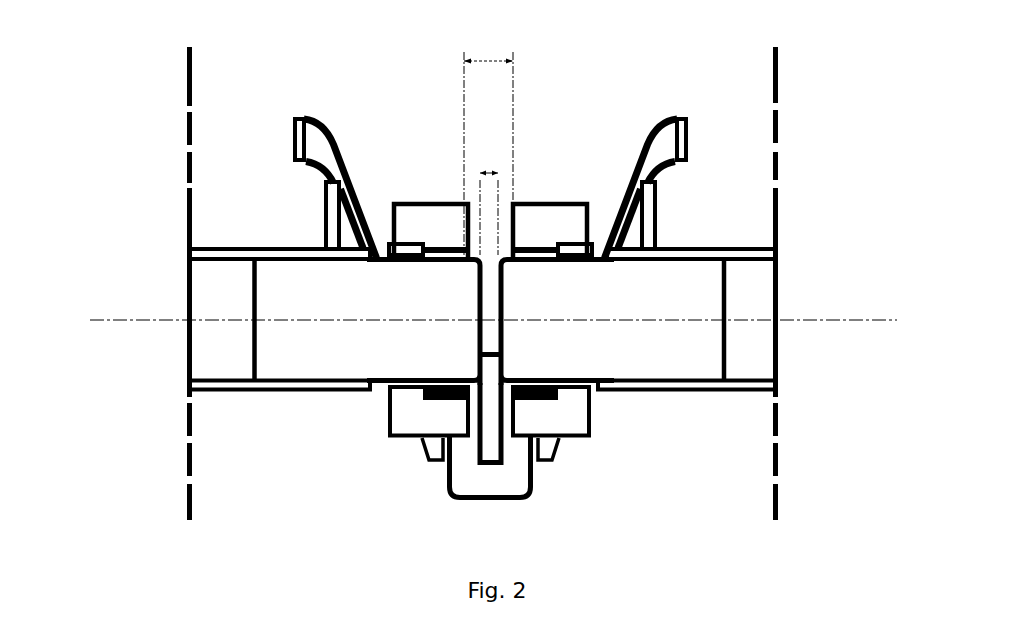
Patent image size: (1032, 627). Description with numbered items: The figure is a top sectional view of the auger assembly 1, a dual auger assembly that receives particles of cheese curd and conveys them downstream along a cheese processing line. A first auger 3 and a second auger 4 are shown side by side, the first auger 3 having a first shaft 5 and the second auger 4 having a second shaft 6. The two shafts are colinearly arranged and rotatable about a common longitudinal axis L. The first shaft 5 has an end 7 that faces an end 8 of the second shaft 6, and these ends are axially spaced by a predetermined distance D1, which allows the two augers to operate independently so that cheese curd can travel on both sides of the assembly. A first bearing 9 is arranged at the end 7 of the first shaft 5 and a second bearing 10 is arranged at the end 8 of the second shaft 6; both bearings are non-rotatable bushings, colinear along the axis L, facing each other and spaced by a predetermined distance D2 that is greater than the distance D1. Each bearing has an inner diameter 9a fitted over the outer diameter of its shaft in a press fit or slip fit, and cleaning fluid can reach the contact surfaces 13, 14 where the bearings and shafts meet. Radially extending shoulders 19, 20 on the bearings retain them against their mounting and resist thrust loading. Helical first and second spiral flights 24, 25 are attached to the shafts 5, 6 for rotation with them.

The auger assembly 1 is at (140, 150).
The first auger 3 is at (177, 312).
The second auger 4 is at (729, 336).
The first shaft 5 is at (223, 282).
The second shaft 6 is at (693, 288).
The end of the first shaft 7 is at (476, 315).
The end of the second shaft 8 is at (503, 359).
The first bearing 9 is at (411, 410).
The inner diameter 9a is at (384, 387).
The second bearing 10 is at (562, 418).
The contact surface 13 is at (392, 255).
The contact surface 14 is at (545, 247).
The radially extending shoulder 19 is at (413, 243).
The radially extending shoulder 20 is at (552, 254).
The first spiral flight 24 is at (313, 150).
The second spiral flight 25 is at (652, 160).
The longitudinal axis L is at (504, 326).
The predetermined distance D1 is at (489, 192).
The predetermined distance D2 is at (488, 141).